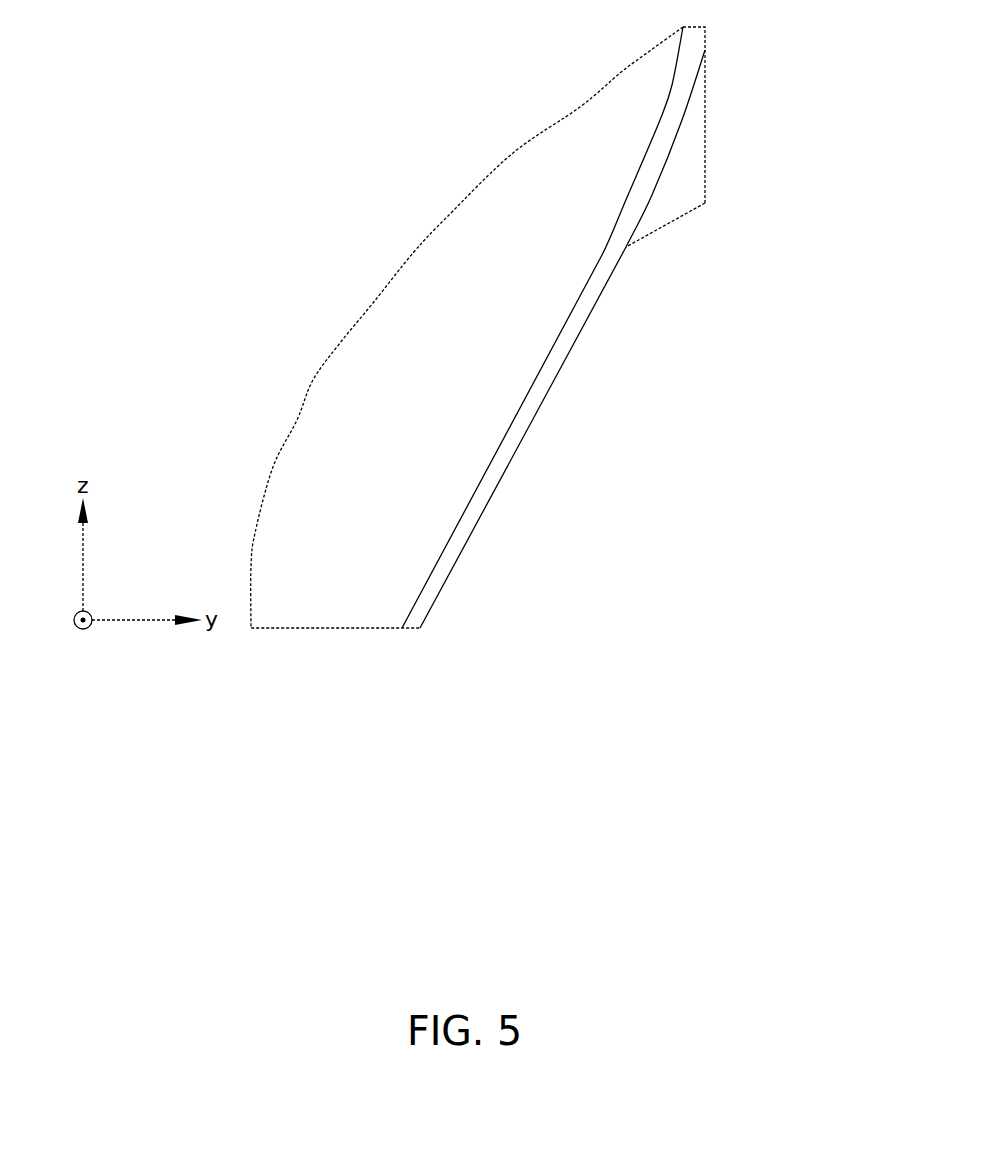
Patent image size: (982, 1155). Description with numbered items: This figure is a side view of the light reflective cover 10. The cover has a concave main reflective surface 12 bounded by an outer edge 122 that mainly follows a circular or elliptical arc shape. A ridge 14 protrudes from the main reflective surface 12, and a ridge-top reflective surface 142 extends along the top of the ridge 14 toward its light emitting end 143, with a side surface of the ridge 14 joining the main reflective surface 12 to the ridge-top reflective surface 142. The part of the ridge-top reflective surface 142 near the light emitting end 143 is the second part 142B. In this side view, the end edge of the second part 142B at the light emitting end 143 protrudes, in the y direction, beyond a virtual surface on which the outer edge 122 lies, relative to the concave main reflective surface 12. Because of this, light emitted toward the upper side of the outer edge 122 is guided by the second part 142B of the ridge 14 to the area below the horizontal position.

The light reflective cover 10 is at (347, 137).
The main reflective surface 12 is at (548, 408).
The outer edge 122 is at (513, 465).
The ridge 14 is at (705, 92).
The ridge-top reflective surface 142 is at (672, 223).
The second part 142B is at (690, 152).
The light emitting end 143 is at (705, 203).